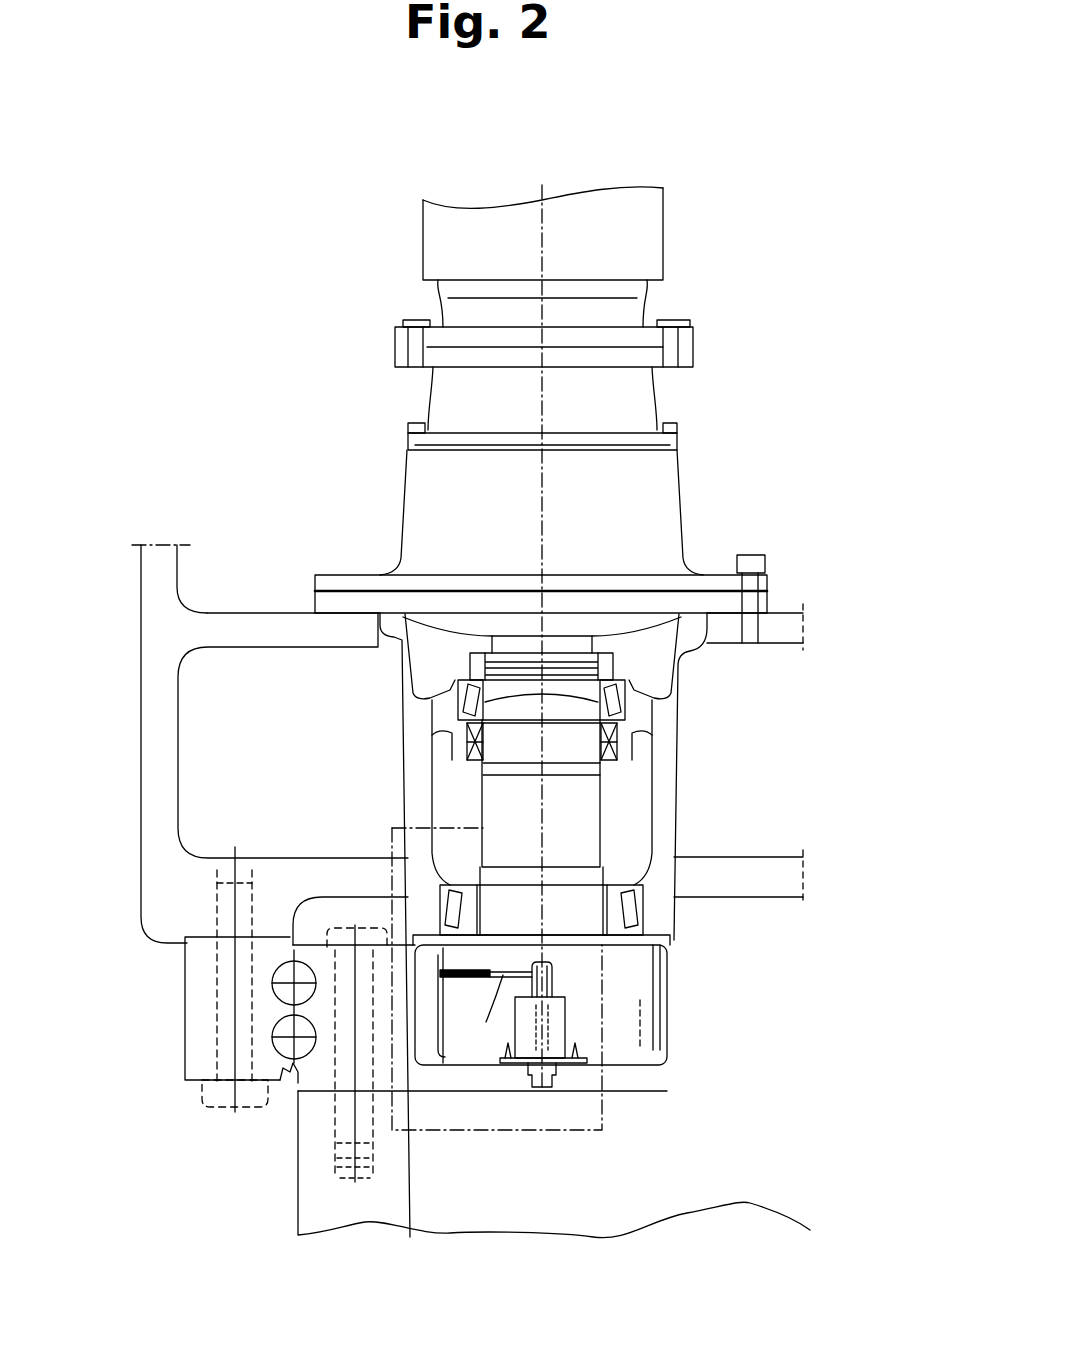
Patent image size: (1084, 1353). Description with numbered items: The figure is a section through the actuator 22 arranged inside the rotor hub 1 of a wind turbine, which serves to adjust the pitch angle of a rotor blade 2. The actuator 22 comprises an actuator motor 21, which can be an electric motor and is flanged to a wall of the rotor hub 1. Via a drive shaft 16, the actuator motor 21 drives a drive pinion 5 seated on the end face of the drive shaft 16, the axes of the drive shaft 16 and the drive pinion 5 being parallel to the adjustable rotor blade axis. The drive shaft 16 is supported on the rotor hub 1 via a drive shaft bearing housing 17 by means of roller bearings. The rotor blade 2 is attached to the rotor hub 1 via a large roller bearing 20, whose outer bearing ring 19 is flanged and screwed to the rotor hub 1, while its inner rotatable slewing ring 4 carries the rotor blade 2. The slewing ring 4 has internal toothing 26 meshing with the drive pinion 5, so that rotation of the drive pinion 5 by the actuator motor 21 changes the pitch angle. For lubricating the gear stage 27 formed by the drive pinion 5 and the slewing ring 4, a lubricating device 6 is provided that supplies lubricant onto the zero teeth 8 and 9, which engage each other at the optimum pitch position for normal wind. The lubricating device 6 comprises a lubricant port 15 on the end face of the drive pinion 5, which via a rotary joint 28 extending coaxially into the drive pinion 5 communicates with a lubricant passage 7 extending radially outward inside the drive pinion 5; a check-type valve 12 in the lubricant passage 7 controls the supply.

The rotor hub 1 is at (153, 738).
The rotor blade 2 is at (404, 1220).
The slewing ring 4 is at (298, 1090).
The drive pinion 5 is at (628, 1050).
The lubricating device 6 is at (571, 1075).
The lubricant passage 7 is at (491, 1017).
The zero tooth of the drive pinion 8 is at (425, 1063).
The zero tooth of the slewing ring 9 is at (442, 1063).
The valve 12 is at (470, 983).
The lubricant port 15 is at (537, 1085).
The drive shaft 16 is at (588, 808).
The drive shaft bearing housing 17 is at (667, 817).
The outer bearing ring 19 is at (188, 1076).
The roller bearing 20 is at (241, 1112).
The actuator motor 21 is at (648, 242).
The actuator 22 is at (770, 440).
The internal toothing 26 is at (412, 1054).
The gear stage 27 is at (470, 1076).
The rotary joint 28 is at (555, 1021).